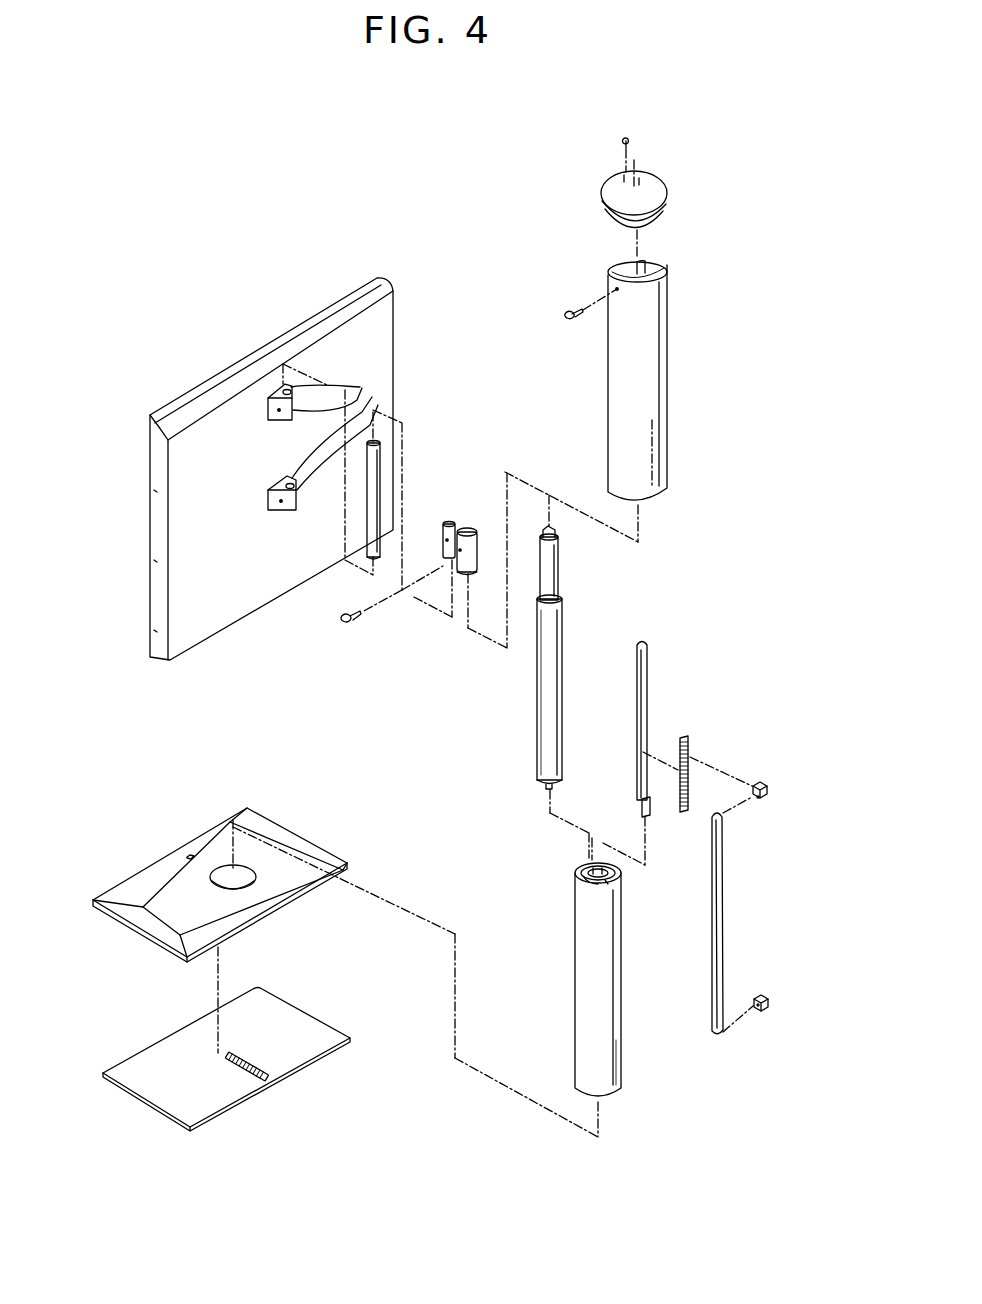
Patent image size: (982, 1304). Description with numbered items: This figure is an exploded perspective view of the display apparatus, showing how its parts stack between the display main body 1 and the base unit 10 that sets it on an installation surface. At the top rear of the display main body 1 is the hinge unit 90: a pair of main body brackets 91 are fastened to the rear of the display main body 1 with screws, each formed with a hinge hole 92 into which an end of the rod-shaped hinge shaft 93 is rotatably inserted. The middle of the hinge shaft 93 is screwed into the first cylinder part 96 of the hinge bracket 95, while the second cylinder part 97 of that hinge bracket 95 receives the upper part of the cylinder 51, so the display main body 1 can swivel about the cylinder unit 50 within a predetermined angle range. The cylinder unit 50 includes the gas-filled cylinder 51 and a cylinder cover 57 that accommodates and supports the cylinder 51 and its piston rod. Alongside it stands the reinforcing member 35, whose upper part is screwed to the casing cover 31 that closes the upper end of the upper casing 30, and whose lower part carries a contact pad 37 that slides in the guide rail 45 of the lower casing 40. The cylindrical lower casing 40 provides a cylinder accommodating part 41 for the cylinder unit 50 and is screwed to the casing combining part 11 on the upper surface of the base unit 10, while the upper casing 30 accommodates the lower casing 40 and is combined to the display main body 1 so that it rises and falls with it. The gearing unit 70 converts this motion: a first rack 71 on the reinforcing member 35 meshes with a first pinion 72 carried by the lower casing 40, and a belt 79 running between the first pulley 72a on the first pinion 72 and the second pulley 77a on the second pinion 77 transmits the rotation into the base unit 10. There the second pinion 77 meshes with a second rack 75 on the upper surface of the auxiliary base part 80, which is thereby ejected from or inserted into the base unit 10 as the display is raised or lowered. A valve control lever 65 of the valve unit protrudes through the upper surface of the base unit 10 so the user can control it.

The display main body 1 is at (228, 634).
The base unit 10 is at (179, 867).
The casing combining part 11 is at (227, 870).
The upper casing 30 is at (659, 368).
The casing cover 31 is at (668, 193).
The reinforcing member 35 is at (648, 699).
The contact pad 37 is at (641, 812).
The lower casing 40 is at (587, 977).
The cylinder accommodating part 41 is at (576, 874).
The guide rail 45 is at (600, 888).
The cylinder unit 50 is at (588, 665).
The cylinder 51 is at (559, 562).
The cylinder cover 57 is at (583, 692).
The valve control lever 65 is at (185, 855).
The gearing unit 70 is at (773, 885).
The first rack 71 is at (689, 752).
The first pinion 72 is at (768, 793).
The first pulley 72a is at (757, 800).
The second rack 75 is at (270, 1080).
The second pinion 77 is at (767, 997).
The second pulley 77a is at (797, 1019).
The belt 79 is at (724, 888).
The auxiliary base part 80 is at (223, 1107).
The hinge unit 90 is at (390, 467).
The main body bracket 91 is at (361, 387).
The hinge hole 92 is at (374, 410).
The hinge shaft 93 is at (380, 450).
The hinge bracket 95 is at (488, 497).
The first cylinder part 96 is at (448, 522).
The second cylinder part 97 is at (468, 530).